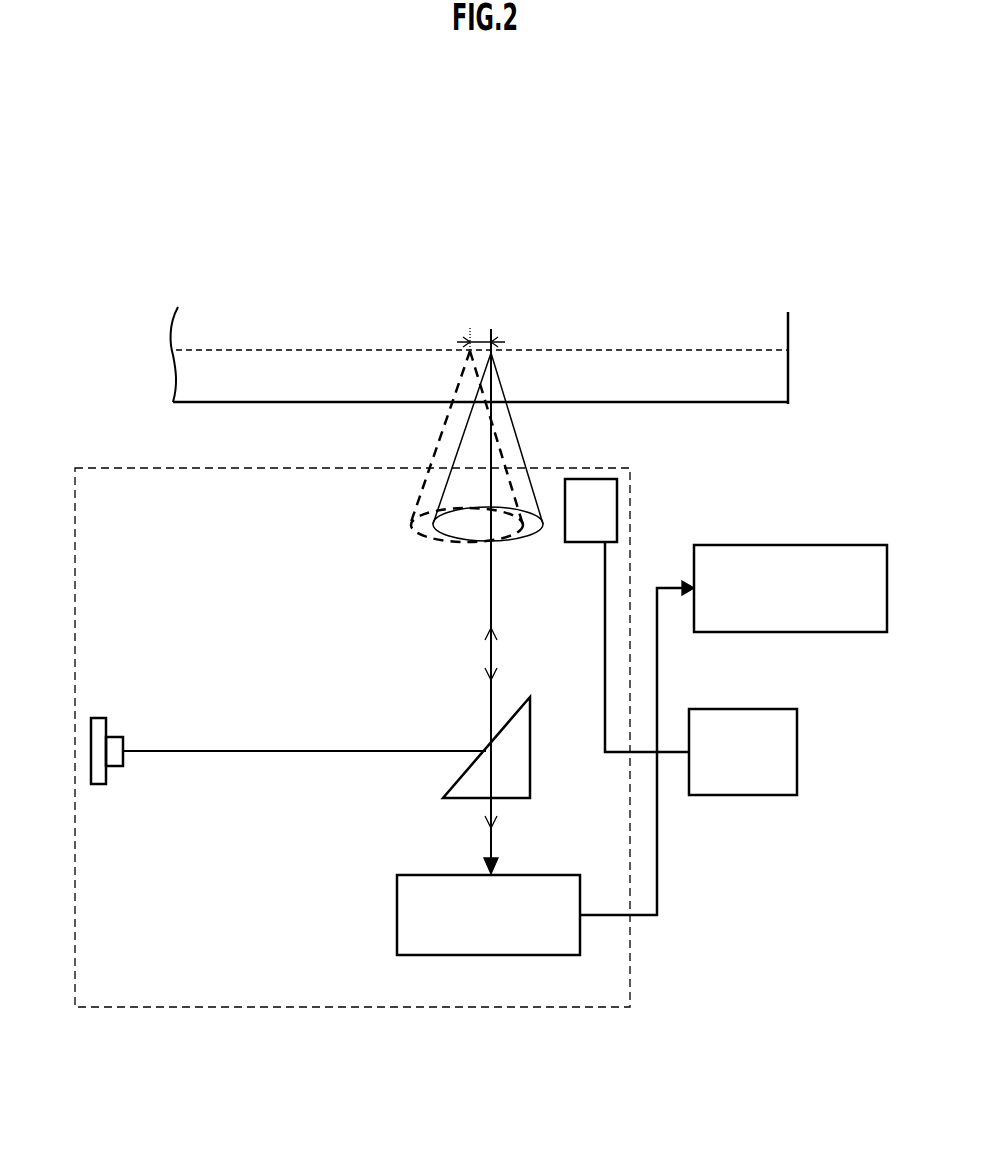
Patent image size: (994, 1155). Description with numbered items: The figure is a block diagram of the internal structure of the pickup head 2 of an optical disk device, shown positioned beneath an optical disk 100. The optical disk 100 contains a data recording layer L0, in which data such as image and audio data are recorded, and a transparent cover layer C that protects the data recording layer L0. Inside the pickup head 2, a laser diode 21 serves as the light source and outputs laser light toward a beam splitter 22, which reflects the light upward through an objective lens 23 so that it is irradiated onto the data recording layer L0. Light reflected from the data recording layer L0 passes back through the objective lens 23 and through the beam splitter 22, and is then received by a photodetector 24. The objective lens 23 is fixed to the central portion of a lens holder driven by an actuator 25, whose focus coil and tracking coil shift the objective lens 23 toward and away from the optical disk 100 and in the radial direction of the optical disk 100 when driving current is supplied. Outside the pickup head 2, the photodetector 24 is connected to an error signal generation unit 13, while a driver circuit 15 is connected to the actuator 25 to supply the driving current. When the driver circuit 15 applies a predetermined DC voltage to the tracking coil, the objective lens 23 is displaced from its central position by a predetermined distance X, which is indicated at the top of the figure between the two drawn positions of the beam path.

The pickup head 2 is at (175, 1008).
The error signal generation unit 13 is at (790, 545).
The driver circuit 15 is at (800, 735).
The laser diode 21 is at (99, 715).
The beam splitter 22 is at (532, 800).
The objective lens 23 is at (455, 530).
The photodetector 24 is at (397, 955).
The actuator 25 is at (590, 543).
The optical disk 100 is at (240, 403).
The data recording layer L0 is at (626, 350).
The cover layer C is at (778, 384).
The predetermined distance X is at (481, 324).